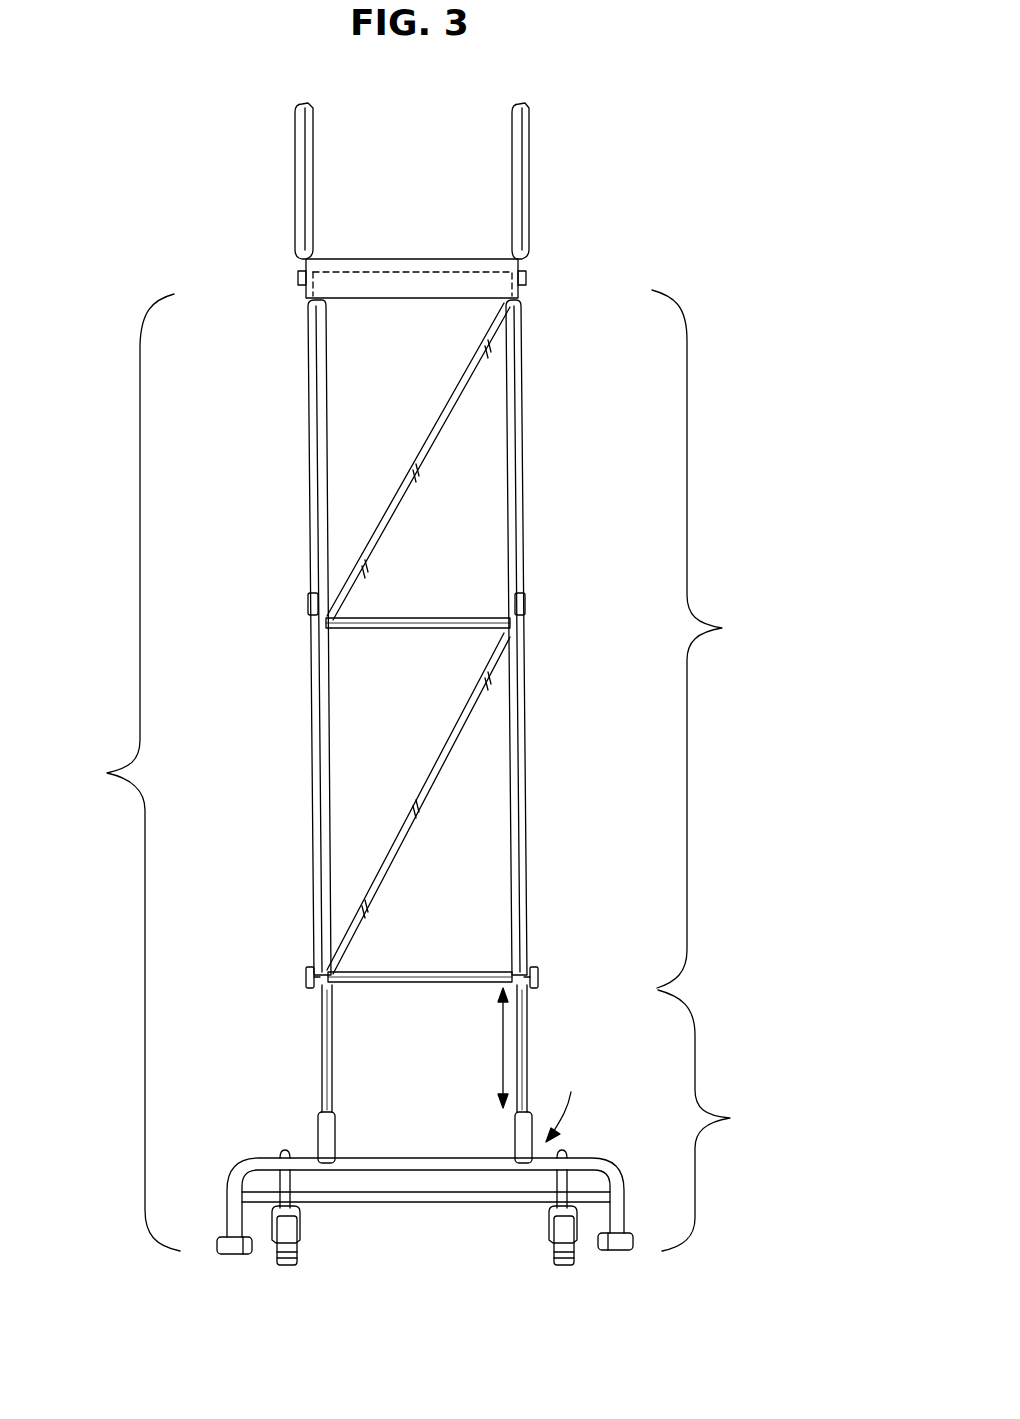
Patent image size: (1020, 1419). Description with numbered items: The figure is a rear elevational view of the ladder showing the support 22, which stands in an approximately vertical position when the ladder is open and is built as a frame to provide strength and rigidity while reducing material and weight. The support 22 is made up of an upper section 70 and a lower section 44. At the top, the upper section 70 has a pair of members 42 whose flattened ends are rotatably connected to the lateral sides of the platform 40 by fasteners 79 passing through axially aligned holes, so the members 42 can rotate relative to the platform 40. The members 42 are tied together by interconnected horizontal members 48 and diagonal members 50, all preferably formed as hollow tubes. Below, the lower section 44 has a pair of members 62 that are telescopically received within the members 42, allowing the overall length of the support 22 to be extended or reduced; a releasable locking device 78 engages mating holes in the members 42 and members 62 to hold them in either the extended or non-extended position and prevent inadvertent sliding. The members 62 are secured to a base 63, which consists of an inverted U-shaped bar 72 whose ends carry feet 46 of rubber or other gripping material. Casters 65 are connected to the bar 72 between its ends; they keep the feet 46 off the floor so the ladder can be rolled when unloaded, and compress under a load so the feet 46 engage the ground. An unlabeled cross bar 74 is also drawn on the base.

The support 22 is at (129, 772).
The platform 40 is at (453, 259).
The members 42 is at (312, 430).
The lower section 44 is at (712, 1120).
The feet 46 is at (232, 1255).
The horizontal members 48 is at (447, 618).
The diagonal members 50 is at (430, 432).
The members 62 is at (322, 1060).
The base 63 is at (566, 1105).
The casters 65 is at (287, 1268).
The upper section 70 is at (705, 639).
The inverted U shaped bar 72 is at (578, 1158).
The cross bar 74 is at (452, 1203).
The releasable locking device 78 is at (306, 977).
The fasteners 79 is at (298, 279).